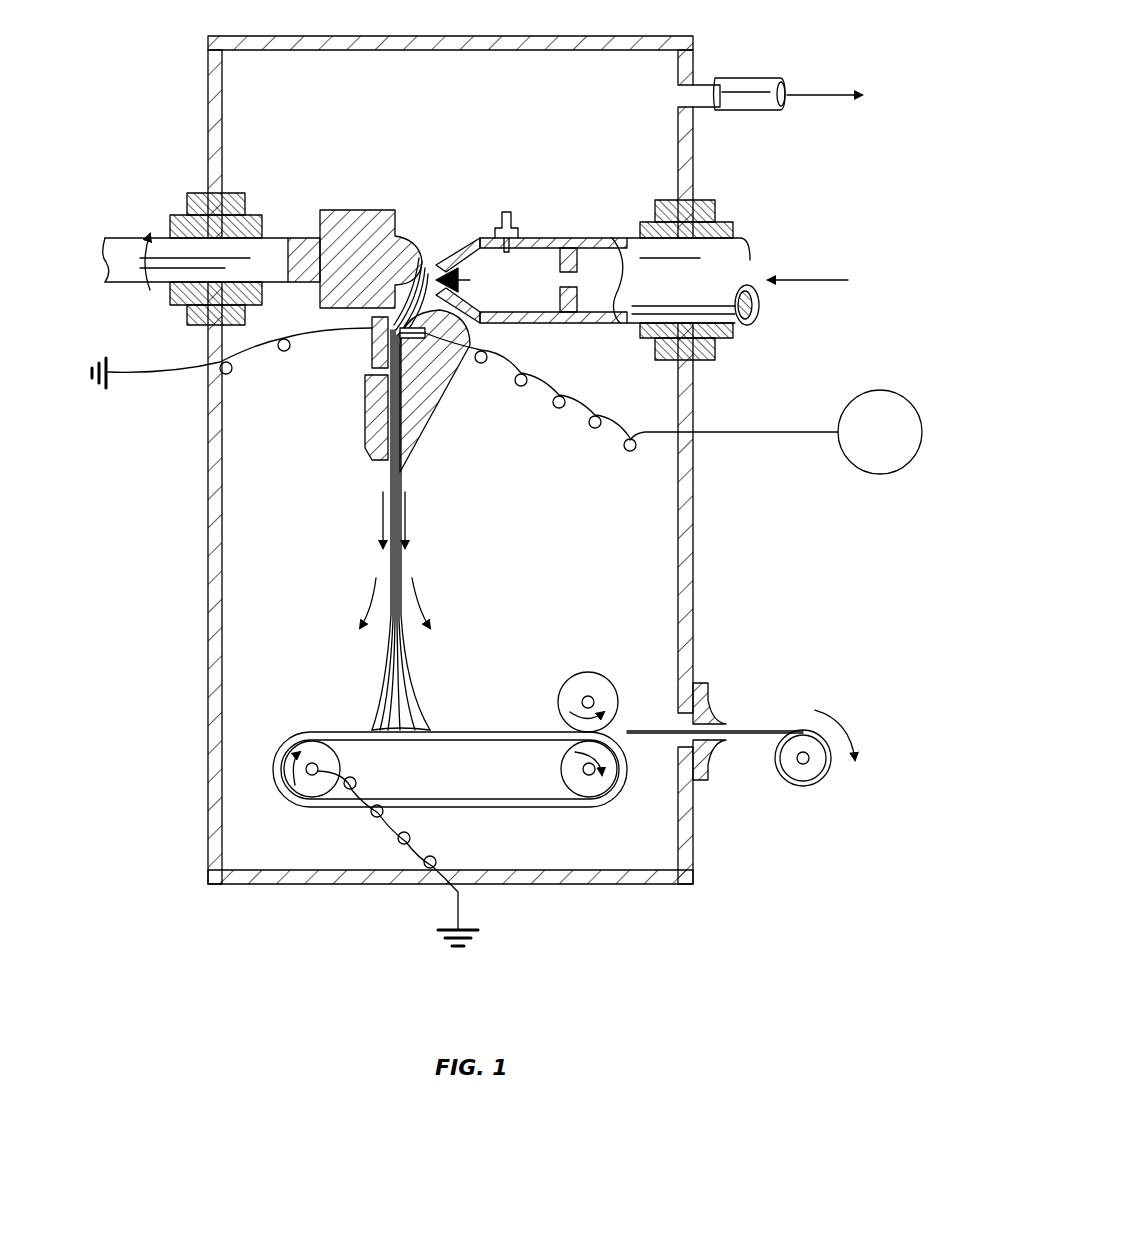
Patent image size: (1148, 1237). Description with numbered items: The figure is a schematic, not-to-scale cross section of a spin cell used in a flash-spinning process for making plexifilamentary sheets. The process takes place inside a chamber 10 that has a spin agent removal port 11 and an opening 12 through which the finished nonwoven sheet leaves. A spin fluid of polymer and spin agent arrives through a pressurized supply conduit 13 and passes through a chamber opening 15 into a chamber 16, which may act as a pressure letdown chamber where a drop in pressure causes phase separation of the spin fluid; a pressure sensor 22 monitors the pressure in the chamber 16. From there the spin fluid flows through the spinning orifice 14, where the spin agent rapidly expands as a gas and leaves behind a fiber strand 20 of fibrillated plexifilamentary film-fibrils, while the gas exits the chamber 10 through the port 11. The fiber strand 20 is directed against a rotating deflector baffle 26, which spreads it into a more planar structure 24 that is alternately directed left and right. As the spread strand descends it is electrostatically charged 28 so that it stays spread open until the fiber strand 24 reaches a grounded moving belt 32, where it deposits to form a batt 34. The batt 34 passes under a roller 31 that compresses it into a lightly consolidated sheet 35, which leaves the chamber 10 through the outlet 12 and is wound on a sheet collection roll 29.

The chamber 10 is at (666, 36).
The spin agent removal port 11 is at (768, 78).
The opening 12 is at (735, 731).
The pressurized supply conduit 13 is at (612, 270).
The spinning orifice 14 is at (485, 242).
The chamber opening 15 is at (578, 278).
The chamber 16 is at (545, 270).
The fiber strand 20 is at (430, 245).
The pressure sensor 22 is at (503, 228).
The planar structure 24 is at (392, 478).
The rotating deflector baffle 26 is at (397, 228).
The electrostatic charging 28 is at (424, 338).
The sheet collection roll 29 is at (803, 765).
The roller 31 is at (588, 672).
The moving belt 32 is at (348, 732).
The batt 34 is at (432, 732).
The lightly consolidated sheet 35 is at (630, 730).